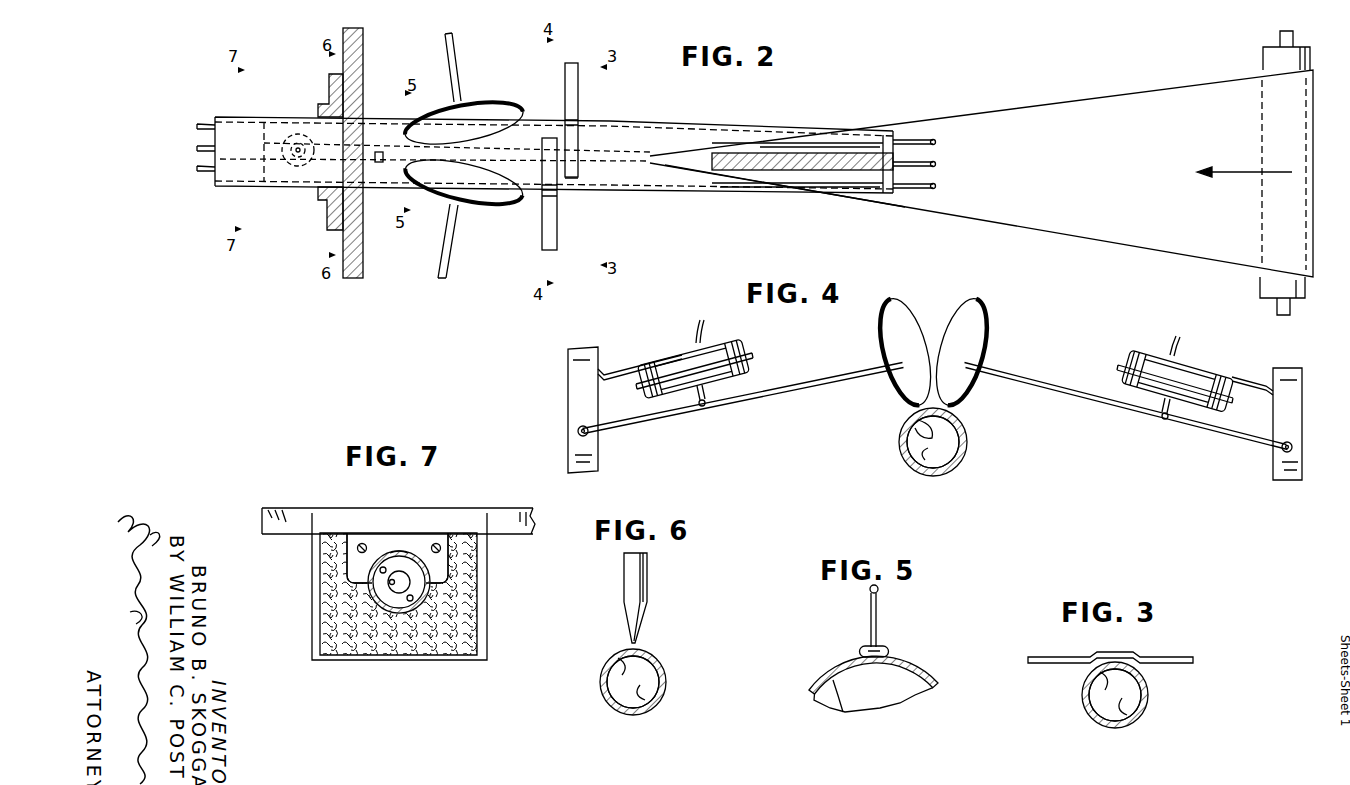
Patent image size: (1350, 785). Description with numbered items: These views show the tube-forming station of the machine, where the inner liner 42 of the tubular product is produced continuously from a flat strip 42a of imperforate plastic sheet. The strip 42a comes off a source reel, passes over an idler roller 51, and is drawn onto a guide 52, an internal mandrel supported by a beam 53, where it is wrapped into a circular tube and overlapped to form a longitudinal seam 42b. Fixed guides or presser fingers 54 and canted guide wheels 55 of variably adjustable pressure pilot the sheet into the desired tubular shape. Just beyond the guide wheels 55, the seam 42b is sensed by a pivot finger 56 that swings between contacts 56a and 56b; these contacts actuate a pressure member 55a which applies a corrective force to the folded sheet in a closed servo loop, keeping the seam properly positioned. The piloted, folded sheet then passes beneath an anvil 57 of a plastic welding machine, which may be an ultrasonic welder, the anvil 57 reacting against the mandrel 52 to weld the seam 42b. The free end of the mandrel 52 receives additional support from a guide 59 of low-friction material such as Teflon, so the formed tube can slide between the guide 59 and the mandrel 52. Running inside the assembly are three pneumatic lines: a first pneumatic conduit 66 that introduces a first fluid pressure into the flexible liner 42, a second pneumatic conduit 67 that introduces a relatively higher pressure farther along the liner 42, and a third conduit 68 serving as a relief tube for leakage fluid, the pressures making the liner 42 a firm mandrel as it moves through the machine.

In FIG. 4, the inner liner 42 is at (962, 430).
In FIG. 7, the inner liner 42 is at (368, 587).
In FIG. 6, the inner liner 42 is at (665, 672).
In FIG. 5, the inner liner 42 is at (822, 684).
In FIG. 3, the inner liner 42 is at (1150, 695).
In FIG. 2, the flat strip 42a is at (1163, 99).
In FIG. 2, the longitudinal seam 42b is at (237, 150).
In FIG. 4, the longitudinal seam 42b is at (923, 425).
In FIG. 7, the longitudinal seam 42b is at (397, 550).
In FIG. 6, the longitudinal seam 42b is at (616, 672).
In FIG. 3, the longitudinal seam 42b is at (1098, 676).
In FIG. 2, the idler roller 51 is at (1263, 57).
In FIG. 2, the guide 52 is at (648, 138).
In FIG. 4, the guide 52 is at (910, 455).
In FIG. 7, the guide 52 is at (432, 587).
In FIG. 6, the guide 52 is at (626, 708).
In FIG. 5, the guide 52 is at (834, 684).
In FIG. 3, the guide 52 is at (1097, 718).
In FIG. 2, the beam 53 is at (360, 44).
In FIG. 4, the beam 53 is at (568, 362).
In FIG. 7, the beam 53 is at (276, 508).
In FIG. 2, the presser fingers 54 is at (579, 103).
In FIG. 3, the presser fingers 54 is at (1046, 657).
In FIG. 2, the canted guide wheels 55 is at (490, 104).
In FIG. 4, the canted guide wheels 55 is at (885, 318).
In FIG. 4, the pressure member 55a is at (732, 348).
In FIG. 2, the pivot finger 56 is at (379, 150).
In FIG. 5, the pivot finger 56 is at (871, 626).
In FIG. 5, the contact 56a is at (862, 615).
In FIG. 5, the contact 56b is at (888, 615).
In FIG. 2, the anvil 57 is at (297, 140).
In FIG. 6, the anvil 57 is at (648, 570).
In FIG. 2, the guide 59 is at (324, 210).
In FIG. 7, the guide 59 is at (458, 533).
In FIG. 2, the first pneumatic conduit 66 is at (929, 190).
In FIG. 7, the first pneumatic conduit 66 is at (411, 602).
In FIG. 2, the second pneumatic conduit 67 is at (912, 140).
In FIG. 7, the second pneumatic conduit 67 is at (380, 570).
In FIG. 2, the third conduit 68 is at (936, 164).
In FIG. 7, the third conduit 68 is at (390, 584).